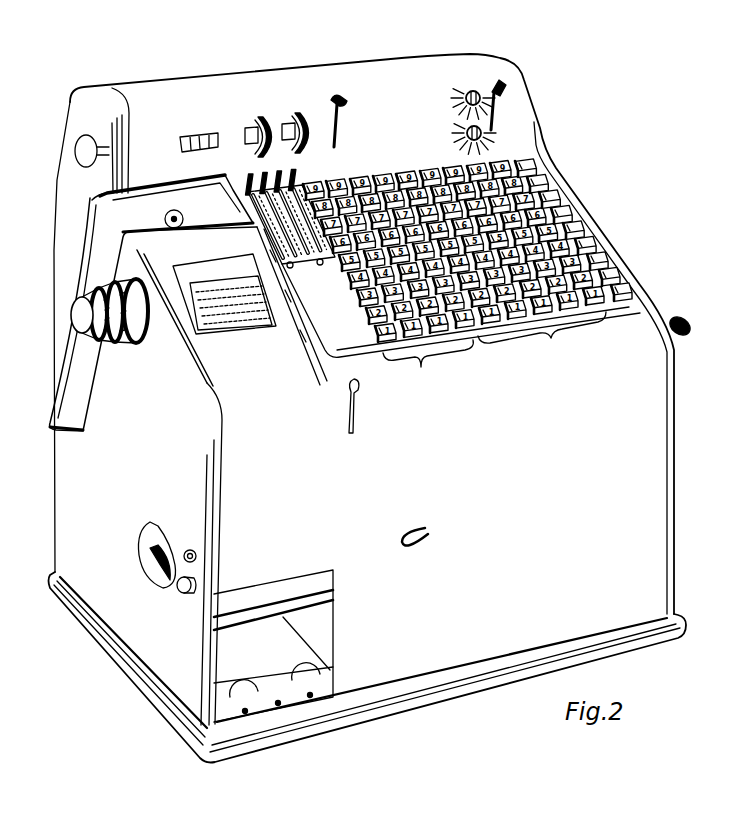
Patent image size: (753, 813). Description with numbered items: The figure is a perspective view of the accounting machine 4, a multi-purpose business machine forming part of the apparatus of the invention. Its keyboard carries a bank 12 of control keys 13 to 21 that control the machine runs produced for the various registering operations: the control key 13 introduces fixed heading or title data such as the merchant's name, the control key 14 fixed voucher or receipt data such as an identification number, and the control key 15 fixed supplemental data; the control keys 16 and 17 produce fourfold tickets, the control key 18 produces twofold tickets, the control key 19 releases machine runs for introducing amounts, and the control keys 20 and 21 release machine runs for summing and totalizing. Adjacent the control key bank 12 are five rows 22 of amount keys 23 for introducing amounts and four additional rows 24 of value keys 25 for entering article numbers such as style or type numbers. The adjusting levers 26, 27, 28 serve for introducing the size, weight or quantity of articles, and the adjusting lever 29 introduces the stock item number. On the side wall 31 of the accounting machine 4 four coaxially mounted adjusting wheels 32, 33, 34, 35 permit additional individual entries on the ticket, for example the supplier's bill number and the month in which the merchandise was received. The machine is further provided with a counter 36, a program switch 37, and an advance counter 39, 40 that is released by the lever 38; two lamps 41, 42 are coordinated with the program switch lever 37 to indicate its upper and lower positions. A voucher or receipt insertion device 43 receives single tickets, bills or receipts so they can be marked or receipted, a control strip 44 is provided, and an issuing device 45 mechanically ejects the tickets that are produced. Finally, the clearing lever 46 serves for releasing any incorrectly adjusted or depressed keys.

The accounting machine 4 is at (57, 510).
The control key bank 12 is at (632, 312).
The control key 13 is at (537, 163).
The control key 14 is at (548, 181).
The control key 15 is at (559, 196).
The control key 16 is at (571, 208).
The control key 17 is at (584, 222).
The control key 18 is at (596, 238).
The control key 19 is at (608, 252).
The control key 20 is at (622, 268).
The control key 21 is at (635, 283).
The rows of amount keys 22 is at (551, 338).
The amount keys 23 is at (473, 163).
The rows of value keys 24 is at (428, 364).
The value keys 25 is at (372, 178).
The adjusting lever 26 is at (246, 192).
The adjusting lever 27 is at (262, 172).
The adjusting lever 28 is at (278, 170).
The adjusting lever 29 is at (295, 170).
The side wall 31 is at (123, 460).
The adjusting wheel 32 is at (117, 277).
The adjusting wheel 33 is at (112, 297).
The adjusting wheel 34 is at (100, 305).
The adjusting wheel 35 is at (76, 325).
The counter 36 is at (194, 134).
The program switch 37 is at (499, 83).
The lever 38 is at (340, 107).
The advance counter 39 is at (297, 113).
The advance counter 40 is at (257, 115).
The lamp 41 is at (483, 133).
The lamp 42 is at (474, 91).
The voucher or receipt insertion device 43 is at (107, 221).
The control strip 44 is at (227, 323).
The issuing device 45 is at (270, 663).
The clearing lever 46 is at (686, 333).